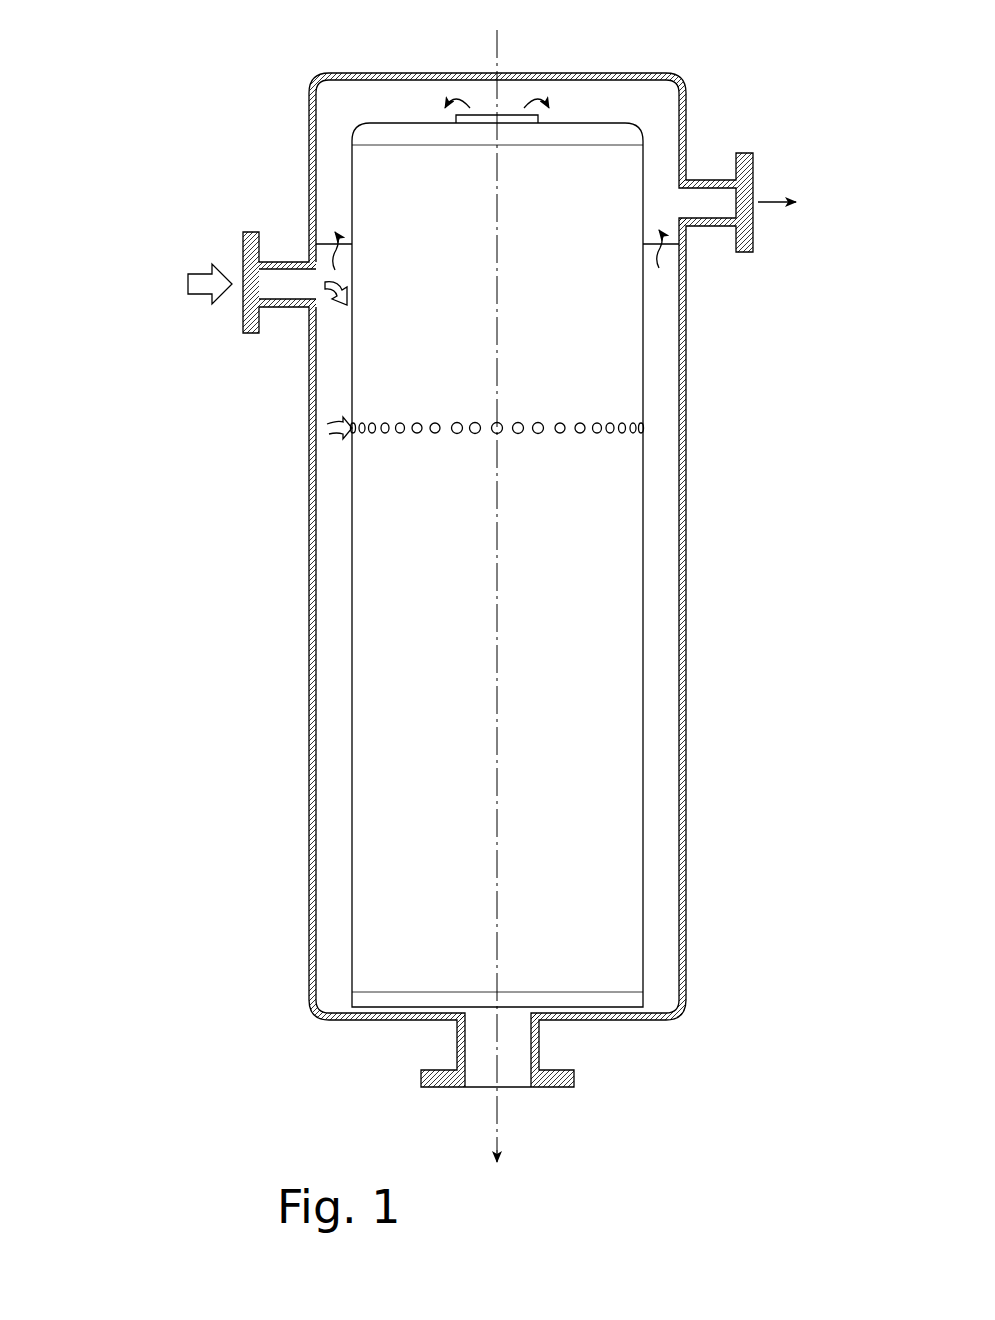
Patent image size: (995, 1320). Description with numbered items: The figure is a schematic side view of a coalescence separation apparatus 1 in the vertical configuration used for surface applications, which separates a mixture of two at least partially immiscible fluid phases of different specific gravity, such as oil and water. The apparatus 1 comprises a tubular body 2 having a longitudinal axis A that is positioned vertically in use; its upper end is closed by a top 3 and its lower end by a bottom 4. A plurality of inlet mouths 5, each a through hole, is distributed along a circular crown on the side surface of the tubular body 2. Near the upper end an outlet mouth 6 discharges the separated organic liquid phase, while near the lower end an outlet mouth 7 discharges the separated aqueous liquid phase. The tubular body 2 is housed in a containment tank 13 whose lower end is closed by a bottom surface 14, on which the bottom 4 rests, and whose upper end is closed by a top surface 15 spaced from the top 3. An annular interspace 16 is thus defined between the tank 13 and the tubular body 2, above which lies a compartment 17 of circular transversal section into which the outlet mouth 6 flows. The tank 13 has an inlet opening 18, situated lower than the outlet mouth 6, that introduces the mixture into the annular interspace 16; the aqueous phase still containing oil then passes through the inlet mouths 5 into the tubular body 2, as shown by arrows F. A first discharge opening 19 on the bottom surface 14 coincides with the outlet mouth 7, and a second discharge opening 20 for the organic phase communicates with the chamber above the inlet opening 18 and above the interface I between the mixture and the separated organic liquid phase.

The coalescence separation apparatus 1 is at (246, 75).
The tubular body 2 is at (648, 741).
The top 3 is at (612, 123).
The bottom 4 is at (585, 1003).
The inlet mouth 5 is at (455, 433).
The outlet mouth 6 is at (490, 115).
The outlet mouth 7 is at (512, 1013).
The containment tank 13 is at (690, 411).
The bottom surface 14 is at (352, 1020).
The top surface 15 is at (385, 70).
The annular interspace 16 is at (327, 775).
The compartment 17 is at (338, 107).
The inlet opening 18 is at (243, 321).
The first discharge opening 19 is at (465, 1077).
The second discharge opening 20 is at (742, 253).
The longitudinal axis A is at (497, 48).
The interface I is at (326, 243).
The arrows F is at (324, 428).